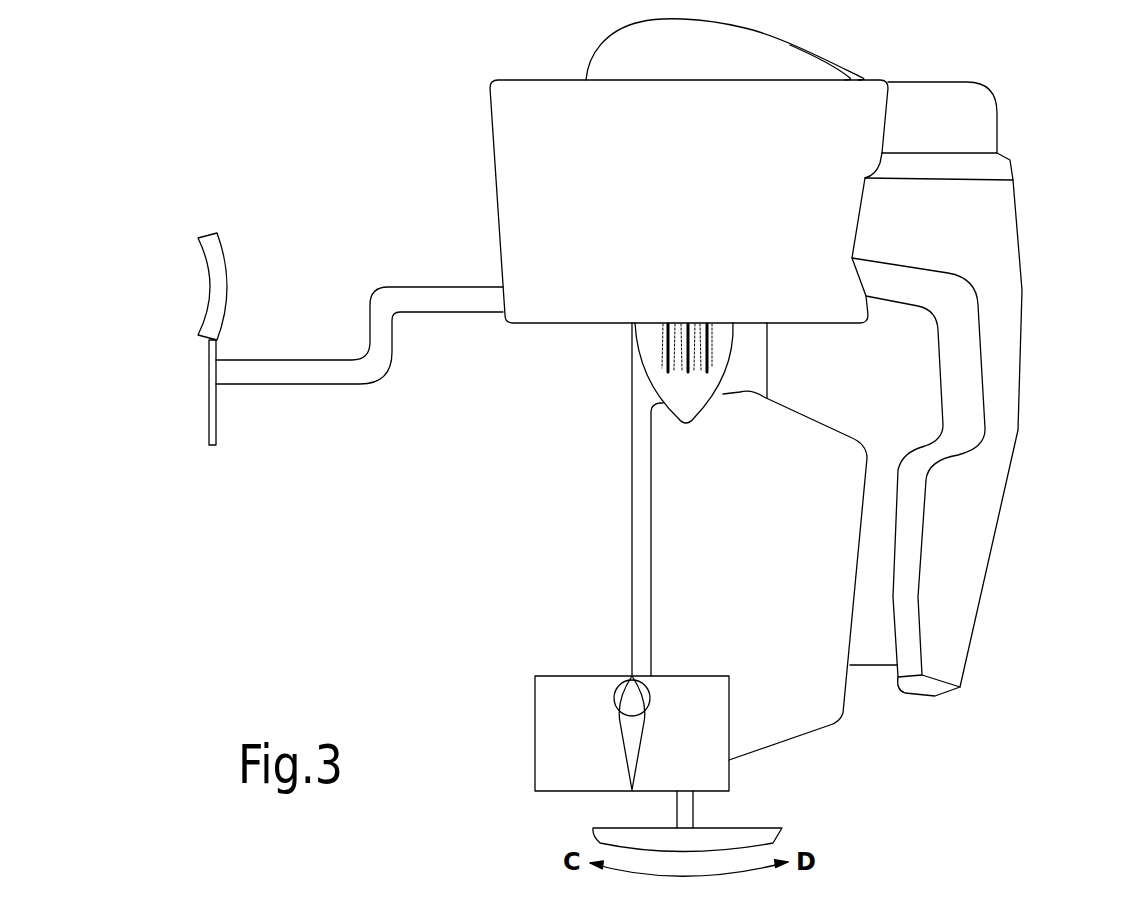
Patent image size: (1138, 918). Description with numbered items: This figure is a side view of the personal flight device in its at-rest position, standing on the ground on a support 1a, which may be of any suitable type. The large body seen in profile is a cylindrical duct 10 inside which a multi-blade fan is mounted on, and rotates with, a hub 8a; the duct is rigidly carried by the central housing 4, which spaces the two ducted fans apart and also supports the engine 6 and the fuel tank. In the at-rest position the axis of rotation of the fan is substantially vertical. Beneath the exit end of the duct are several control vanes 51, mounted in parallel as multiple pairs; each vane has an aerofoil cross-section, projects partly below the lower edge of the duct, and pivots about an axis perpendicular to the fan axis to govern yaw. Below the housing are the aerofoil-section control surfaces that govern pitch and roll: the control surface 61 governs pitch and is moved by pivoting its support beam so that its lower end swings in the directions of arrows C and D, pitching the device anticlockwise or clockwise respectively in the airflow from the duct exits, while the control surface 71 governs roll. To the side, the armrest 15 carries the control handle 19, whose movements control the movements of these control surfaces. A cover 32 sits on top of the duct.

The cylindrical duct 10 is at (689, 201).
The dome cover 32 is at (785, 42).
The engine 6 is at (998, 228).
The central housing 4 is at (633, 530).
The hub 8a is at (662, 390).
The control vane 51 is at (672, 363).
The armrest 15 is at (307, 385).
The control handle 19 is at (208, 287).
The control surface 71 is at (553, 695).
The control surface 61 is at (632, 775).
The support 1a is at (785, 829).